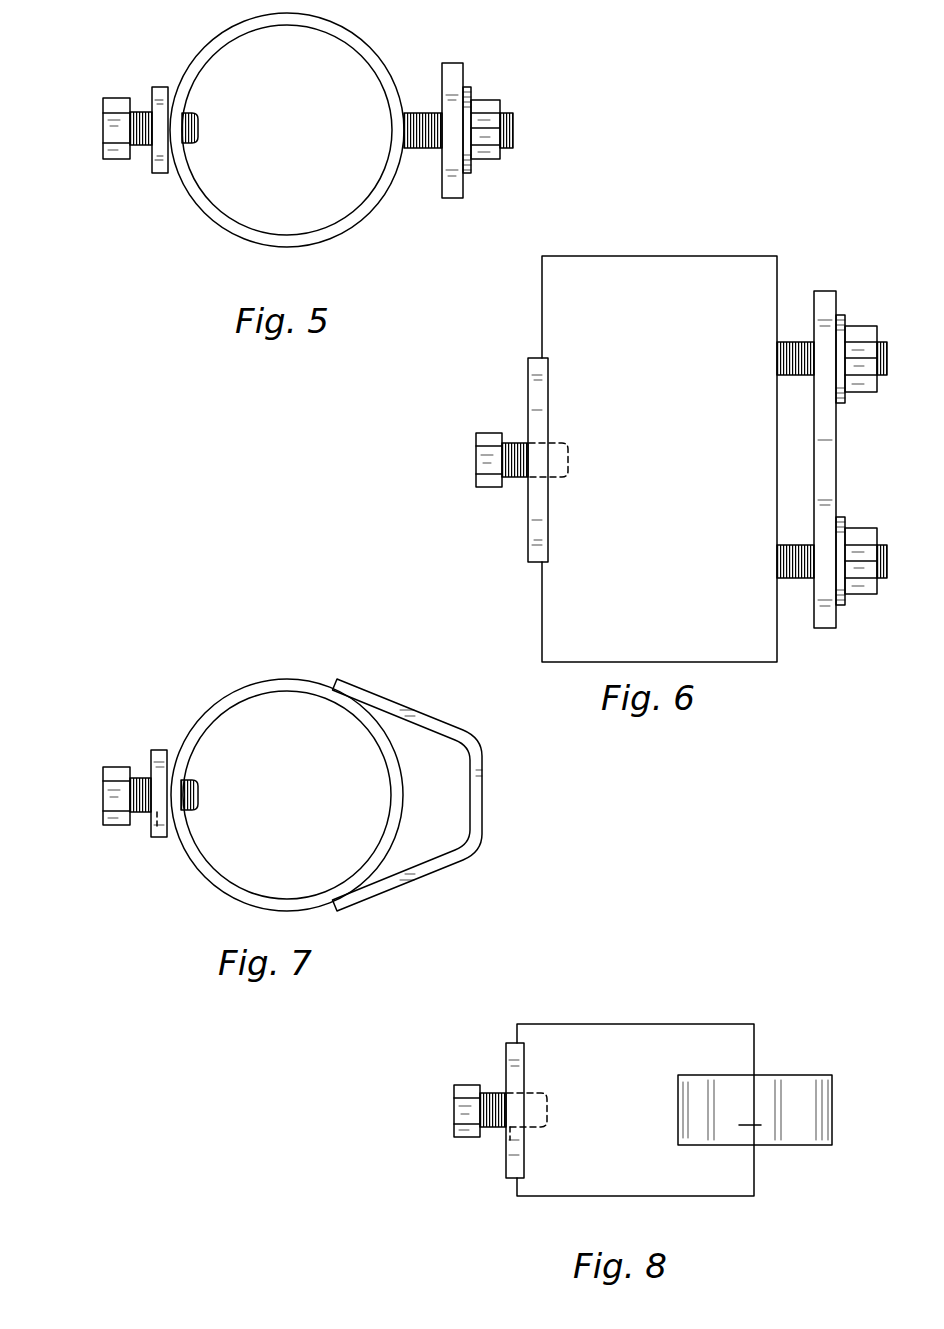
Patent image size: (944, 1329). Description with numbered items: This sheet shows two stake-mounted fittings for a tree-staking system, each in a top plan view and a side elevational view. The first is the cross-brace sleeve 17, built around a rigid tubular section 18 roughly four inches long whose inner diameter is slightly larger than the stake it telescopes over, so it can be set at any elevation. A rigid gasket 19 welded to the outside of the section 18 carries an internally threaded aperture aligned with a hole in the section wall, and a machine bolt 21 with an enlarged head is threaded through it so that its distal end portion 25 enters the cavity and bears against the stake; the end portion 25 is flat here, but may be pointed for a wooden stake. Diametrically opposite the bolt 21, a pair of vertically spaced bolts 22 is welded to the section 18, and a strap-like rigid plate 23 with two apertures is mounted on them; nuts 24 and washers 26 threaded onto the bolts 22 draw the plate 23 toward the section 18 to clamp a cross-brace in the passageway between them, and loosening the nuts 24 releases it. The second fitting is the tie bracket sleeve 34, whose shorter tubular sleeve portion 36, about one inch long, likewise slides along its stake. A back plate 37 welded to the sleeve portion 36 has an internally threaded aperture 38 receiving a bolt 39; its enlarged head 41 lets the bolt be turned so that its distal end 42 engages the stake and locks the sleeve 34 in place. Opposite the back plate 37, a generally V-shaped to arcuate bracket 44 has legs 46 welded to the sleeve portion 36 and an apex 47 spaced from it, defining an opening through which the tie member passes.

In FIG. 5, the cross-brace sleeve 17 is at (289, 156).
In FIG. 6, the cross-brace sleeve 17 is at (656, 418).
In FIG. 5, the rigid tubular section 18 is at (378, 57).
In FIG. 6, the rigid tubular section 18 is at (540, 312).
In FIG. 5, the rigid gasket 19 is at (160, 91).
In FIG. 6, the rigid gasket 19 is at (532, 389).
In FIG. 5, the machine bolt 21 is at (112, 128).
In FIG. 6, the machine bolt 21 is at (490, 449).
In FIG. 5, the bolts 22 is at (422, 150).
In FIG. 6, the bolts 22 is at (793, 342).
In FIG. 5, the strap-like rigid plate 23 is at (465, 72).
In FIG. 6, the strap-like rigid plate 23 is at (835, 300).
In FIG. 5, the nuts 24 is at (485, 157).
In FIG. 6, the nuts 24 is at (858, 387).
In FIG. 5, the distal end portion 25 is at (200, 126).
In FIG. 6, the distal end portion 25 is at (575, 461).
In FIG. 5, the washers 26 is at (467, 176).
In FIG. 6, the washers 26 is at (845, 405).
In FIG. 7, the tie bracket sleeve 34 is at (300, 798).
In FIG. 8, the tie bracket sleeve 34 is at (636, 1073).
In FIG. 7, the tubular sleeve portion 36 is at (304, 678).
In FIG. 8, the tubular sleeve portion 36 is at (517, 1036).
In FIG. 7, the back plate 37 is at (156, 755).
In FIG. 8, the back plate 37 is at (505, 1062).
In FIG. 7, the internally threaded aperture 38 is at (141, 780).
In FIG. 8, the internally threaded aperture 38 is at (493, 1097).
In FIG. 7, the bolt 39 is at (157, 838).
In FIG. 8, the bolt 39 is at (510, 1148).
In FIG. 7, the enlarged head 41 is at (112, 797).
In FIG. 8, the enlarged head 41 is at (465, 1103).
In FIG. 7, the distal end 42 is at (200, 791).
In FIG. 8, the distal end 42 is at (555, 1118).
In FIG. 7, the bracket 44 is at (443, 797).
In FIG. 8, the bracket 44 is at (774, 1080).
In FIG. 7, the legs 46 is at (418, 708).
In FIG. 8, the legs 46 is at (749, 1114).
In FIG. 7, the apex 47 is at (485, 772).
In FIG. 8, the apex 47 is at (832, 1114).